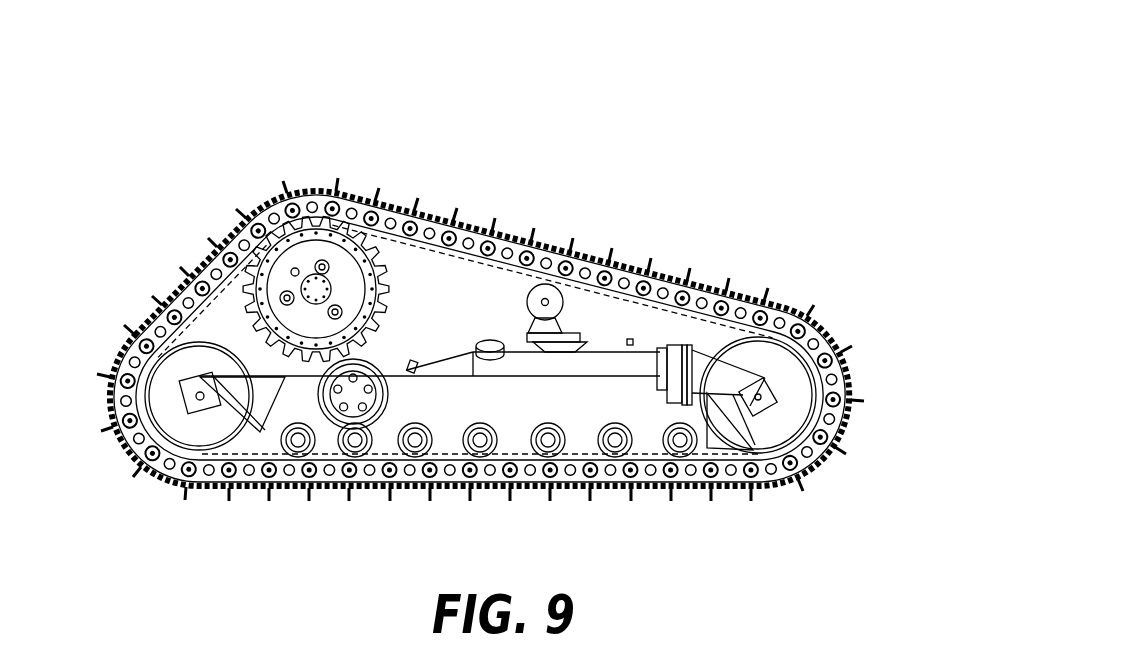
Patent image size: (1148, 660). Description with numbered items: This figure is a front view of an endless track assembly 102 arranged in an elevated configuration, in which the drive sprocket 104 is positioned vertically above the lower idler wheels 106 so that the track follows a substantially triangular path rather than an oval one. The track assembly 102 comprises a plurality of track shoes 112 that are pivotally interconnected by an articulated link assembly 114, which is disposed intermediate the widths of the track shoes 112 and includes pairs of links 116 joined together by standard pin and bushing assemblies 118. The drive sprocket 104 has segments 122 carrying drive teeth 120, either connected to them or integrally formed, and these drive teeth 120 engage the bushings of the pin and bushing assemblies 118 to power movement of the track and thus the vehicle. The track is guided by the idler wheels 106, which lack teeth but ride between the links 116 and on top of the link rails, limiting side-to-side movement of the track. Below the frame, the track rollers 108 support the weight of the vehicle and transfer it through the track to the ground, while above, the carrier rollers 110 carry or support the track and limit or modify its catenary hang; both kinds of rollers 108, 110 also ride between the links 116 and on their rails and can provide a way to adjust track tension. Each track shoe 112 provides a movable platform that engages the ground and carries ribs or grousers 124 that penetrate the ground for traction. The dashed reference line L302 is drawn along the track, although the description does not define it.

The track assembly 102 is at (700, 178).
The drive sprocket 104 is at (305, 250).
The idler wheel 106 is at (157, 328).
The track roller 108 is at (247, 447).
The carrier roller 110 is at (526, 300).
The track shoe 112 is at (267, 488).
The articulated link assembly 114 is at (180, 290).
The link 116 is at (650, 290).
The pin and bushing assembly 118 is at (200, 303).
The drive tooth 120 is at (368, 338).
The segment 122 is at (368, 284).
The grouser 124 is at (832, 460).
The track line L302 is at (587, 273).